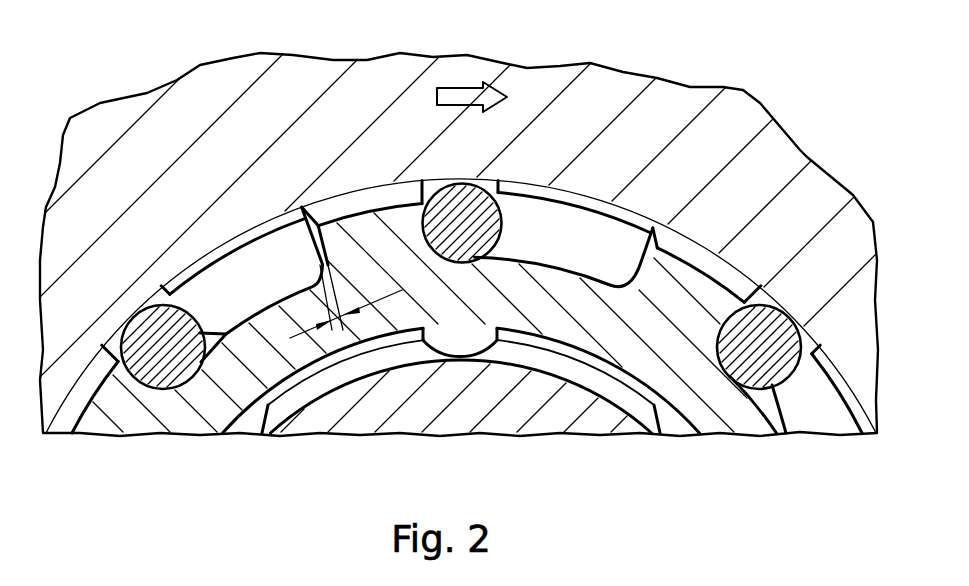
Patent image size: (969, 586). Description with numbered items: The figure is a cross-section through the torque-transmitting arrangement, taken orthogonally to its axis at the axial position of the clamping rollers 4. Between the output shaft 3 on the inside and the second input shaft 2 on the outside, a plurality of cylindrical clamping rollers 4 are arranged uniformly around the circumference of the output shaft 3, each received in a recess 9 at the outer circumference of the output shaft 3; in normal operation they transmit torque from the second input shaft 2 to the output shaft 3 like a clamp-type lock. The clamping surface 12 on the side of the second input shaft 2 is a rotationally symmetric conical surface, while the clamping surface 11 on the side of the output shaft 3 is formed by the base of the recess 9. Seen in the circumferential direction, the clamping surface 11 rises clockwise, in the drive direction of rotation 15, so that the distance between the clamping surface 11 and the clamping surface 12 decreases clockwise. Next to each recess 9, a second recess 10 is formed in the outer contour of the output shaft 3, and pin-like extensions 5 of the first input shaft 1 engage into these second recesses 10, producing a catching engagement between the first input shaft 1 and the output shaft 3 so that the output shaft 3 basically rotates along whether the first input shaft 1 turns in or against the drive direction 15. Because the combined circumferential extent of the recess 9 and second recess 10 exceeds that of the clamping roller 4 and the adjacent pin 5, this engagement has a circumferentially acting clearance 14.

The first input shaft 1 is at (553, 420).
The second input shaft 2 is at (716, 137).
The output shaft 3 is at (176, 425).
The clamping rollers 4 is at (460, 205).
The pin-like extensions 5 is at (255, 262).
The recess 9 is at (463, 284).
The second recess 10 is at (561, 294).
The clamping surface 11 is at (497, 243).
The clamping surface 12 is at (684, 246).
The clearance 14 is at (346, 301).
The drive direction of rotation 15 is at (462, 95).